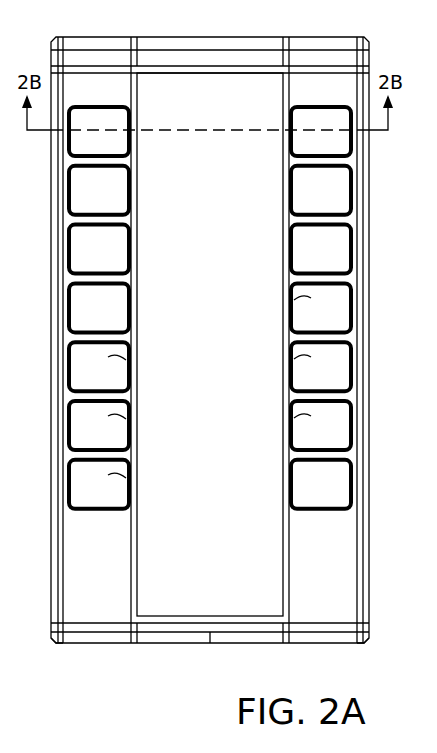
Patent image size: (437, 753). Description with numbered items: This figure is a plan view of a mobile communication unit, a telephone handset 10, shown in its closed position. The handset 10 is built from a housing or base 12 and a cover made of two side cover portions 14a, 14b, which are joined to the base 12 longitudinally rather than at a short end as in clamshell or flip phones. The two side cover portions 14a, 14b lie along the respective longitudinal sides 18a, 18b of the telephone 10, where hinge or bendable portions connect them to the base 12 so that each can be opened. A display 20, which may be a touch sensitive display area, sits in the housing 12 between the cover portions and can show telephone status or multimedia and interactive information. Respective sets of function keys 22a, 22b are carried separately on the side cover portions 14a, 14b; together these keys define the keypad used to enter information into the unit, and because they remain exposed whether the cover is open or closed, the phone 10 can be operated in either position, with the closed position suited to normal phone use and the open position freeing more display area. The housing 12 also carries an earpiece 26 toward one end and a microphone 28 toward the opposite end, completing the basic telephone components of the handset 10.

The telephone handset 10 is at (88, 28).
The housing 12 is at (210, 40).
The earpiece 26 is at (213, 57).
The microphone 28 is at (198, 637).
The display 20 is at (223, 206).
The side cover portion 14a is at (132, 302).
The side cover portion 14b is at (363, 247).
The function keys 22a is at (132, 457).
The function keys 22b is at (288, 256).
The longitudinal side 18a is at (90, 665).
The longitudinal side 18b is at (377, 651).